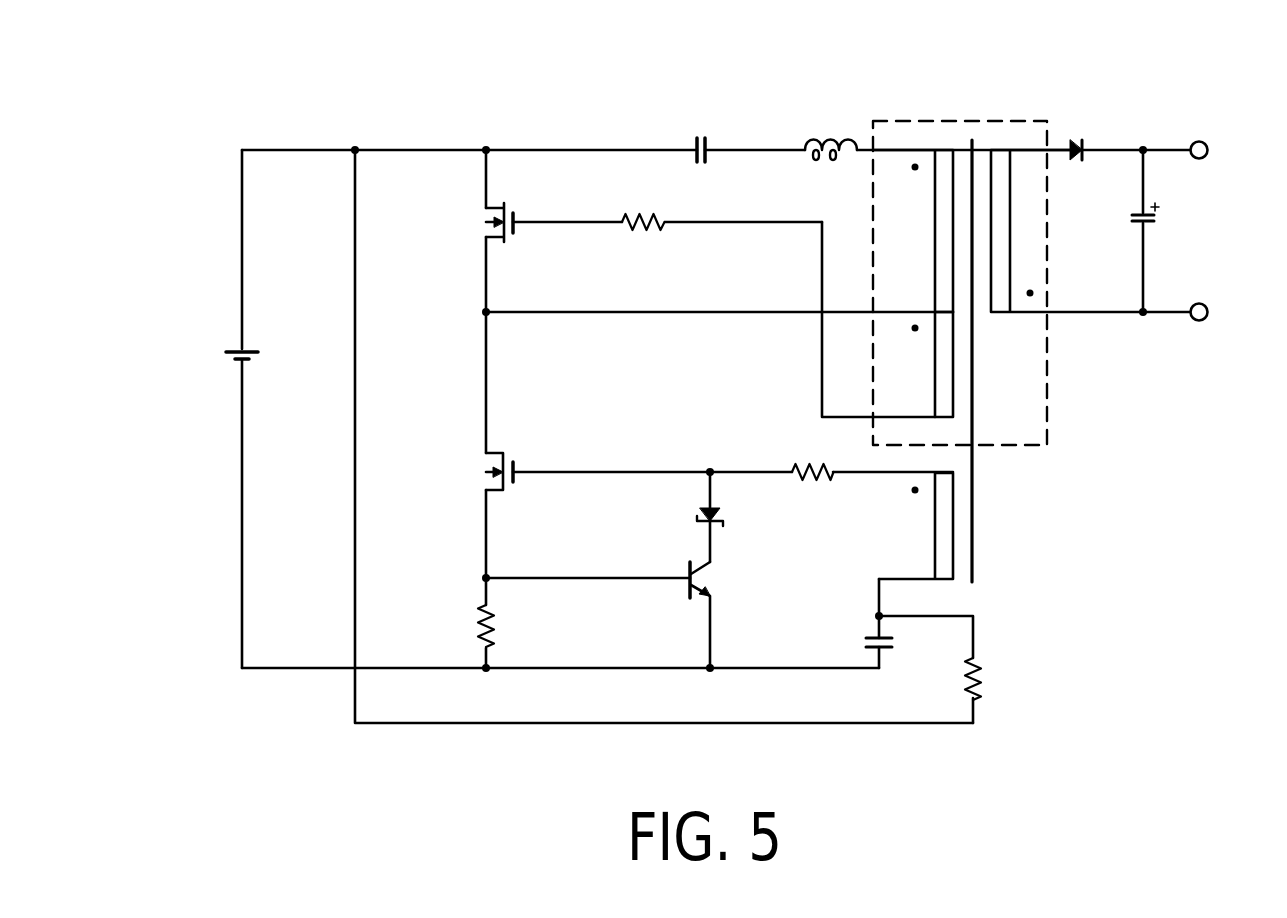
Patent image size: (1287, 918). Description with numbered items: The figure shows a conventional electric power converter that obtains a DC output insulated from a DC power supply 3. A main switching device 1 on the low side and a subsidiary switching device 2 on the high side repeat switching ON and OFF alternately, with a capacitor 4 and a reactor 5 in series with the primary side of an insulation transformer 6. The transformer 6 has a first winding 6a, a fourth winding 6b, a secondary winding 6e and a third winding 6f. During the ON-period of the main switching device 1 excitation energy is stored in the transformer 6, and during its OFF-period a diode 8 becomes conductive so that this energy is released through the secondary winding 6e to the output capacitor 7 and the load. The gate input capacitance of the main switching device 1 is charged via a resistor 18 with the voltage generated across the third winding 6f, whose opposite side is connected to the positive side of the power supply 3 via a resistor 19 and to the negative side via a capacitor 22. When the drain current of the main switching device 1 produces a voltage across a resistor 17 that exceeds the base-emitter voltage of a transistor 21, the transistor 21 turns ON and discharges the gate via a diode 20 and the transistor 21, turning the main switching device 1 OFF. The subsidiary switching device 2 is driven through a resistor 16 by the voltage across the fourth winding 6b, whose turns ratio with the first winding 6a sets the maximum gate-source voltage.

The main switching device 1 is at (486, 482).
The subsidiary switching device 2 is at (472, 216).
The DC power supply 3 is at (228, 352).
The capacitor 4 is at (704, 138).
The reactor 5 is at (850, 148).
The insulation transformer 6 is at (1023, 323).
The first winding 6a is at (934, 246).
The fourth winding 6b is at (934, 391).
The secondary winding 6e is at (1012, 200).
The third winding 6f is at (934, 560).
The output capacitor 7 is at (1150, 222).
The diode 8 is at (1074, 143).
The resistor 16 is at (660, 226).
The resistor 17 is at (482, 610).
The resistor 18 is at (793, 465).
The resistor 19 is at (978, 690).
The diode 20 is at (715, 512).
The transistor 21 is at (700, 568).
The capacitor 22 is at (874, 638).